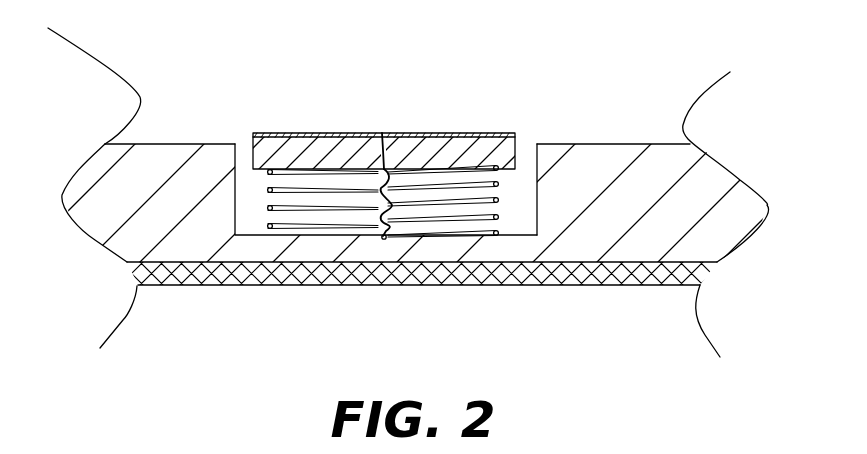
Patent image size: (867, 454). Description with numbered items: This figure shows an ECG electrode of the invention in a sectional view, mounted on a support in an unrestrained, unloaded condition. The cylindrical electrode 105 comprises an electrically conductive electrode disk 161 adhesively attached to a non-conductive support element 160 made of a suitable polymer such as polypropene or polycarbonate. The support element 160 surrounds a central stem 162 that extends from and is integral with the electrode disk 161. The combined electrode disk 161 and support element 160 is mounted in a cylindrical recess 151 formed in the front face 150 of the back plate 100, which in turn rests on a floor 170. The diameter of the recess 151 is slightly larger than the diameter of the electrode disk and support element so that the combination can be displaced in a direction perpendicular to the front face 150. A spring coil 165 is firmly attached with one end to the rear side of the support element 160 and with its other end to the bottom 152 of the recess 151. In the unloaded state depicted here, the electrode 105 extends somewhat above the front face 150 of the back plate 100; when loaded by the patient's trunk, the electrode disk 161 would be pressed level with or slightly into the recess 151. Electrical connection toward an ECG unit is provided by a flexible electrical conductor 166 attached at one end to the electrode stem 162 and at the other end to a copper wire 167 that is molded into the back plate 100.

The back plate 100 is at (625, 202).
The cylindrical electrode 105 is at (312, 118).
The front face 150 is at (187, 140).
The cylindrical recess 151 is at (240, 163).
The bottom of the recess 152 is at (506, 224).
The support element 160 is at (514, 143).
The electrode disk 161 is at (440, 132).
The central stem 162 is at (383, 131).
The spring coil 165 is at (322, 226).
The flexible electrical conductor 166 is at (397, 214).
The copper wire 167 is at (382, 238).
The floor 170 is at (255, 280).